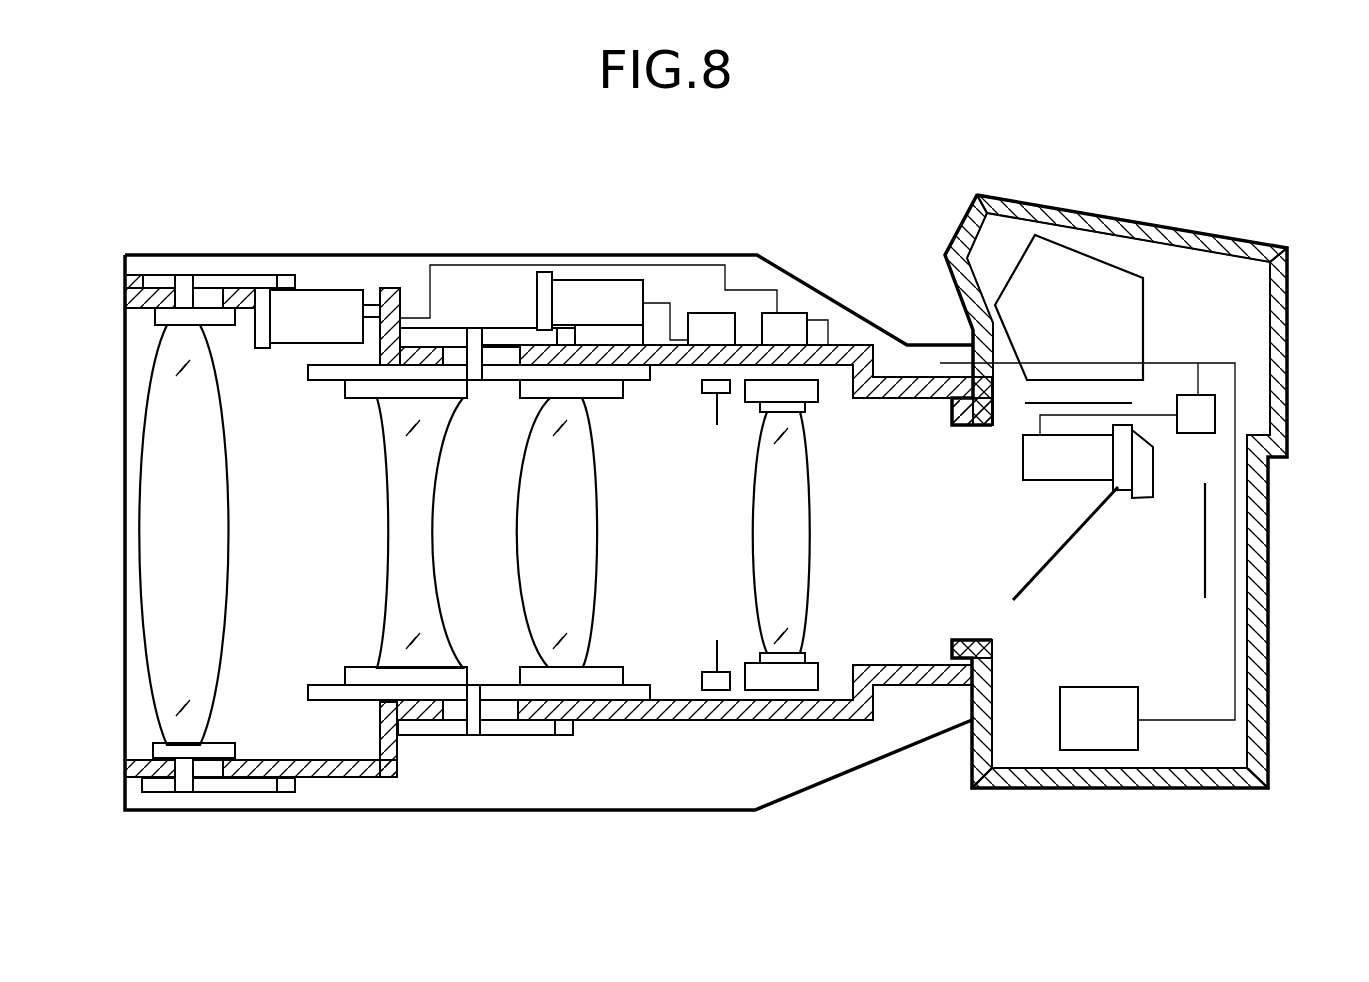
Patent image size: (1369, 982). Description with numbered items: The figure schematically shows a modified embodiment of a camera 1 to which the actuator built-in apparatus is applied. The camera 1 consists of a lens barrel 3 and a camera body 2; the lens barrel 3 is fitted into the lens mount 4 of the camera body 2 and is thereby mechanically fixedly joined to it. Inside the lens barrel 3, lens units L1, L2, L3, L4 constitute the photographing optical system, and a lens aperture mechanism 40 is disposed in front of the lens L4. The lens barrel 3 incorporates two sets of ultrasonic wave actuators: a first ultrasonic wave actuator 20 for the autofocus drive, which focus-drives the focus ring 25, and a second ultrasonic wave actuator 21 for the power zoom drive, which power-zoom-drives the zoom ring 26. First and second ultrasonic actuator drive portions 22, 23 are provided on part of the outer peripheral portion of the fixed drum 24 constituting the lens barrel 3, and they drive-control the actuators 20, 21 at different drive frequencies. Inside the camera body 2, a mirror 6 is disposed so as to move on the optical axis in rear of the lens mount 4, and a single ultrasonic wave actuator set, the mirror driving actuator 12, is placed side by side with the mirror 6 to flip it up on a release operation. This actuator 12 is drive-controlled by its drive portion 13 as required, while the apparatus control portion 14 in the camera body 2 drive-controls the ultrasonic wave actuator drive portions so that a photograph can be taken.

The camera 1 is at (1108, 193).
The camera body 2 is at (1268, 585).
The lens barrel 3 is at (643, 812).
The lens mount 4 is at (983, 660).
The mirror 6 is at (1040, 565).
The second ultrasonic wave actuator 12 is at (1023, 457).
The second ultrasonic wave actuator drive portion 13 is at (1190, 427).
The apparatus control portion 14 is at (1095, 750).
The first ultrasonic wave actuator 20 is at (318, 300).
The second ultrasonic wave actuator 21 is at (592, 302).
The first ultrasonic actuator drive portion 22 is at (793, 322).
The second ultrasonic actuator drive portion 23 is at (708, 325).
The fixed drum 24 is at (355, 779).
The focus ring 25 is at (220, 290).
The zoom ring 26 is at (497, 335).
The lens aperture mechanism 40 is at (713, 655).
The lens unit L1 is at (220, 547).
The lens unit L2 is at (392, 565).
The lens unit L3 is at (583, 568).
The lens unit L4 is at (805, 568).